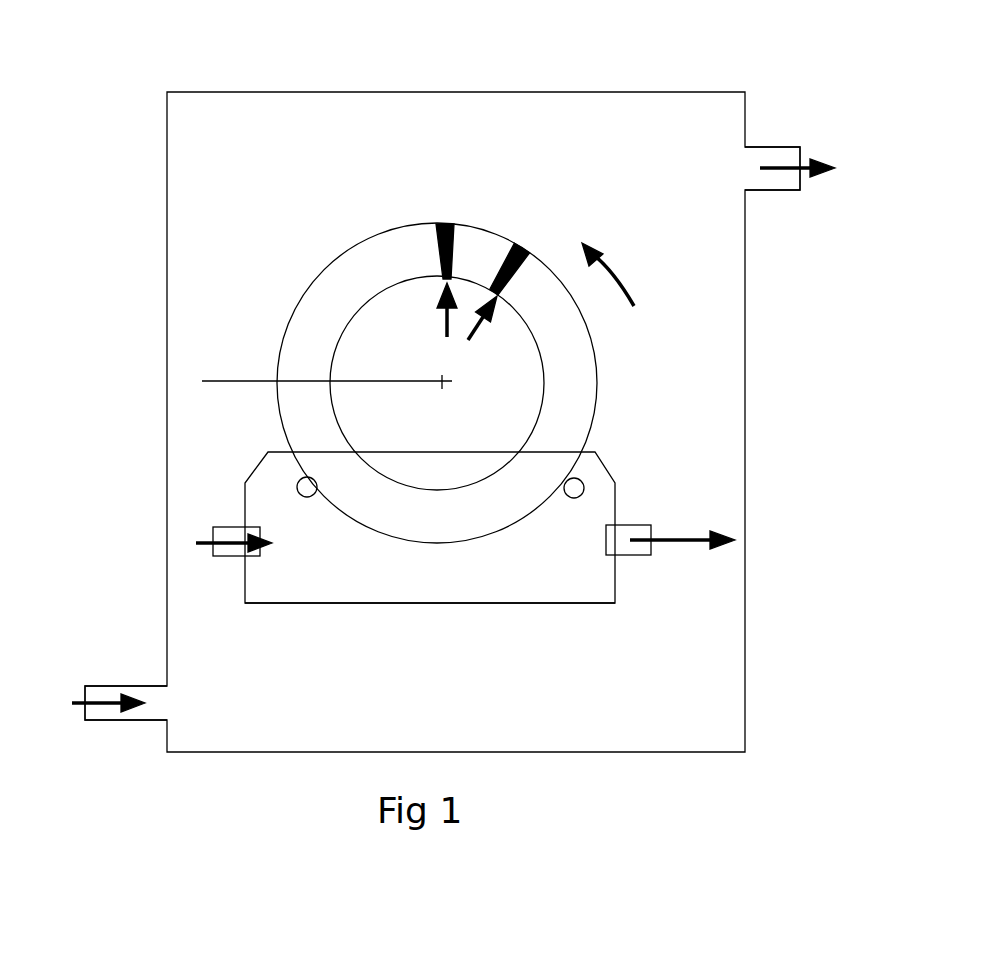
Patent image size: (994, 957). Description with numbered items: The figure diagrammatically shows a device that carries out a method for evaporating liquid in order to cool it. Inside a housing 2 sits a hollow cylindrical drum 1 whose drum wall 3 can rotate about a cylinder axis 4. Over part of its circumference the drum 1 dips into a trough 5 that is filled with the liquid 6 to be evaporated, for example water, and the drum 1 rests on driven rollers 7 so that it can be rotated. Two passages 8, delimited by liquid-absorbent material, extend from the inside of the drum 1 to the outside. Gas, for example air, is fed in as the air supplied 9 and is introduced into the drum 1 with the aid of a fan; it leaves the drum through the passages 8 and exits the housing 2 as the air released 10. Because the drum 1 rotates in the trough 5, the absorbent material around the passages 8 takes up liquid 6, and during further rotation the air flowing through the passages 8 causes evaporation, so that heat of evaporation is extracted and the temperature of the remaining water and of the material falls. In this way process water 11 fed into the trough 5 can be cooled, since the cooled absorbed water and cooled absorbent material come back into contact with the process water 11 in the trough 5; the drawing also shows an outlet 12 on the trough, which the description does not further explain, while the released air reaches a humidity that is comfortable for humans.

The hollow cylindrical drum 1 is at (407, 327).
The housing 2 is at (500, 92).
The drum wall 3 is at (565, 378).
The cylinder axis 4 is at (327, 365).
The trough 5 is at (547, 606).
The liquid 6 is at (290, 570).
The driven rollers 7 is at (297, 490).
The passages 8 is at (445, 224).
The air supplied 9 is at (108, 703).
The air released 10 is at (818, 168).
The process water 11 is at (197, 542).
The trough outlet 12 is at (694, 542).